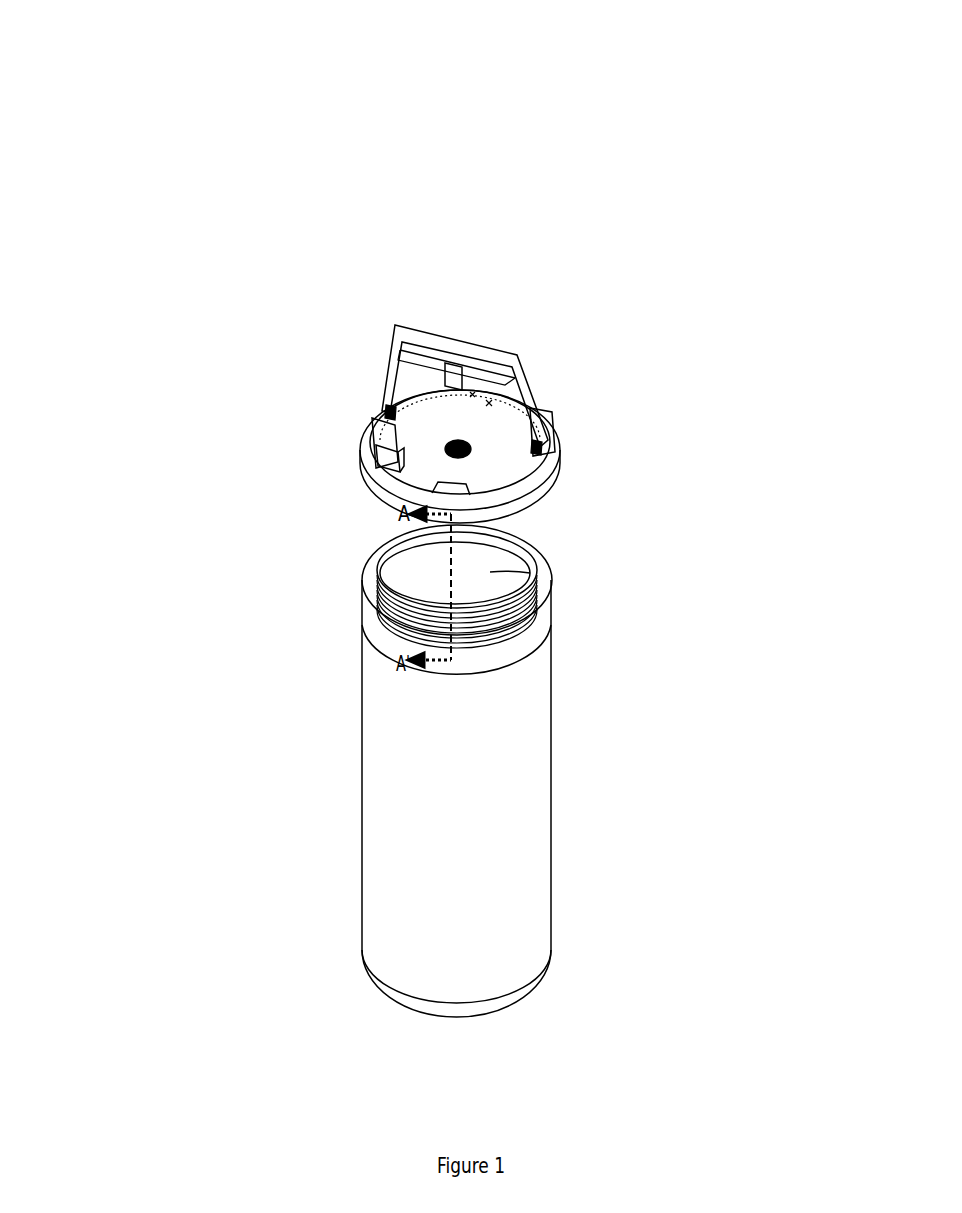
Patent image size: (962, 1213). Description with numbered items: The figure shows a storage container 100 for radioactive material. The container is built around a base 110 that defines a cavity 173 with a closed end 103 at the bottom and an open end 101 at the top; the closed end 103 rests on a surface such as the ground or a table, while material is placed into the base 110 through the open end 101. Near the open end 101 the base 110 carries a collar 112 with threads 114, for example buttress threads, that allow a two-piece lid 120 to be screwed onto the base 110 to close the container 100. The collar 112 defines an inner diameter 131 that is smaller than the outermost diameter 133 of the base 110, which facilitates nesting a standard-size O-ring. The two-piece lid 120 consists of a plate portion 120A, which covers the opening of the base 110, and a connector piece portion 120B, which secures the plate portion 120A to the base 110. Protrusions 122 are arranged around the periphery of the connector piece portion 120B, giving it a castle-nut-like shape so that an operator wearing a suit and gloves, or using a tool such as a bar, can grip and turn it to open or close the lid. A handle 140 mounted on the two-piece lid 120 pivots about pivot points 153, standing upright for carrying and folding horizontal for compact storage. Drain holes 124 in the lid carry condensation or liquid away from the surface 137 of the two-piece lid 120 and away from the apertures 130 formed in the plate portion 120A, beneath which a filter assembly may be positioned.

The storage container 100 is at (74, 26).
The open end 101 is at (425, 130).
The closed end 103 is at (410, 1042).
The base 110 is at (502, 812).
The collar 112 is at (368, 628).
The threads 114 is at (533, 572).
The two-piece lid 120 is at (490, 363).
The plate portion 120A is at (497, 425).
The connector piece portion 120B is at (385, 517).
The protrusions 122 is at (372, 455).
The drain holes 124 is at (445, 395).
The apertures 130 is at (465, 455).
The inner diameter 131 is at (490, 572).
The outermost diameter 133 is at (551, 907).
The surface 137 is at (465, 418).
The handle 140 is at (397, 327).
The pivot points 153 is at (697, 360).
The cavity 173 is at (422, 600).